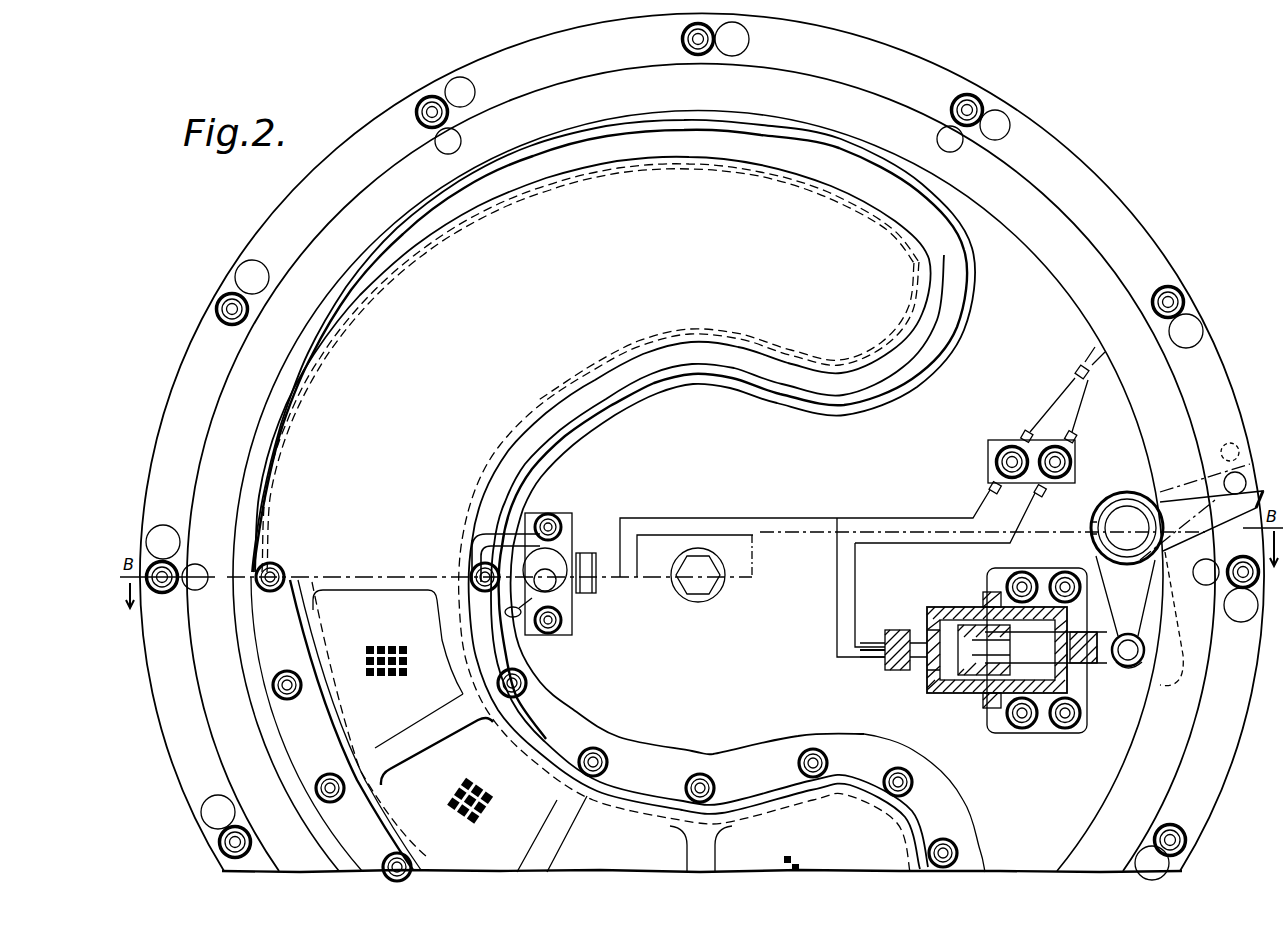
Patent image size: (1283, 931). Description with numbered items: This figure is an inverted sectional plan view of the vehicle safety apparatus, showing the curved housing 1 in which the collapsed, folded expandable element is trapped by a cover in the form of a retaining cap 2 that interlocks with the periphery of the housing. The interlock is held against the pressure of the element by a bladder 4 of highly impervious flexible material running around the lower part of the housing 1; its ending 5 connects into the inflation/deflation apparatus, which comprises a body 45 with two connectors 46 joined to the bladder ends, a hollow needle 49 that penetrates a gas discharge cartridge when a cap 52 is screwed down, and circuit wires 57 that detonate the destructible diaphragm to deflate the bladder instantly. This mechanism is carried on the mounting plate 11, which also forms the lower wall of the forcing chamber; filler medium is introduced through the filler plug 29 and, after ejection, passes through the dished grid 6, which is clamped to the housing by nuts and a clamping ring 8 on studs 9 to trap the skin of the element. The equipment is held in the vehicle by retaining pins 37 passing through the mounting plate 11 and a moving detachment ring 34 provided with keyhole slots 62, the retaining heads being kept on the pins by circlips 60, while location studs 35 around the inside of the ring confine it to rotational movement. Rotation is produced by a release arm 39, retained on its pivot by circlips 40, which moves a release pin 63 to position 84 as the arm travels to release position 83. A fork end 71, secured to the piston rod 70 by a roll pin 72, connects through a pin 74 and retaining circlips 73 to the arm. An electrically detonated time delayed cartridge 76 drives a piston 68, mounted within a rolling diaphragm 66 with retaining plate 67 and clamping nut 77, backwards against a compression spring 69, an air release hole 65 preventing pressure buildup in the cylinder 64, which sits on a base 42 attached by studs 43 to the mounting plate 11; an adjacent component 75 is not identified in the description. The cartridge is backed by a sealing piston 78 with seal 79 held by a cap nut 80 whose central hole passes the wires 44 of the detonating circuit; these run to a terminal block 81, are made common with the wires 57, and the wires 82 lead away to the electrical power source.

The housing 1 is at (527, 158).
The retaining cap 2 is at (672, 175).
The bladder 4 is at (789, 348).
The ending of the bladder 5 is at (487, 541).
The grid 6 is at (389, 647).
The clamping ring 8 is at (770, 778).
The studs 9 is at (810, 750).
The mounting plate 11 is at (783, 468).
The filler plug 29 is at (710, 575).
The detachment ring 34 is at (1128, 222).
The location studs 35 is at (197, 567).
The retaining pins 37 is at (240, 309).
The release arm 39 is at (1180, 532).
The circlips 40 is at (1127, 505).
The base 42 is at (1032, 726).
The studs 43 is at (1066, 726).
The wires 44 is at (882, 652).
The body 45 is at (572, 598).
The connectors 46 is at (562, 528).
The hollow needle 49 is at (540, 586).
The cap 52 is at (560, 562).
The circuit wires 57 is at (598, 578).
The circlips 60 is at (237, 316).
The keyhole slots 62 is at (257, 270).
The release pin 63 is at (1224, 487).
The cylinder 64 is at (992, 598).
The air release hole 65 is at (1084, 688).
The rolling diaphragm 66 is at (978, 608).
The retaining plate 67 is at (945, 612).
The piston 68 is at (975, 697).
The compression spring 69 is at (985, 703).
The piston rod 70 is at (1078, 636).
The fork end 71 is at (1124, 640).
The roll pin 72 is at (1085, 668).
The retaining circlips 73 is at (1127, 666).
The pin 74 is at (1138, 668).
The cylinder wall 75 is at (933, 690).
The time delayed cartridge 76 is at (915, 643).
The clamping nut 77 is at (930, 668).
The sealing piston 78 is at (888, 632).
The seal 79 is at (897, 628).
The cap nut 80 is at (892, 670).
The terminal block 81 is at (992, 442).
The wires 82 is at (1077, 378).
The release position 83 is at (1165, 667).
The position 84 is at (1230, 445).